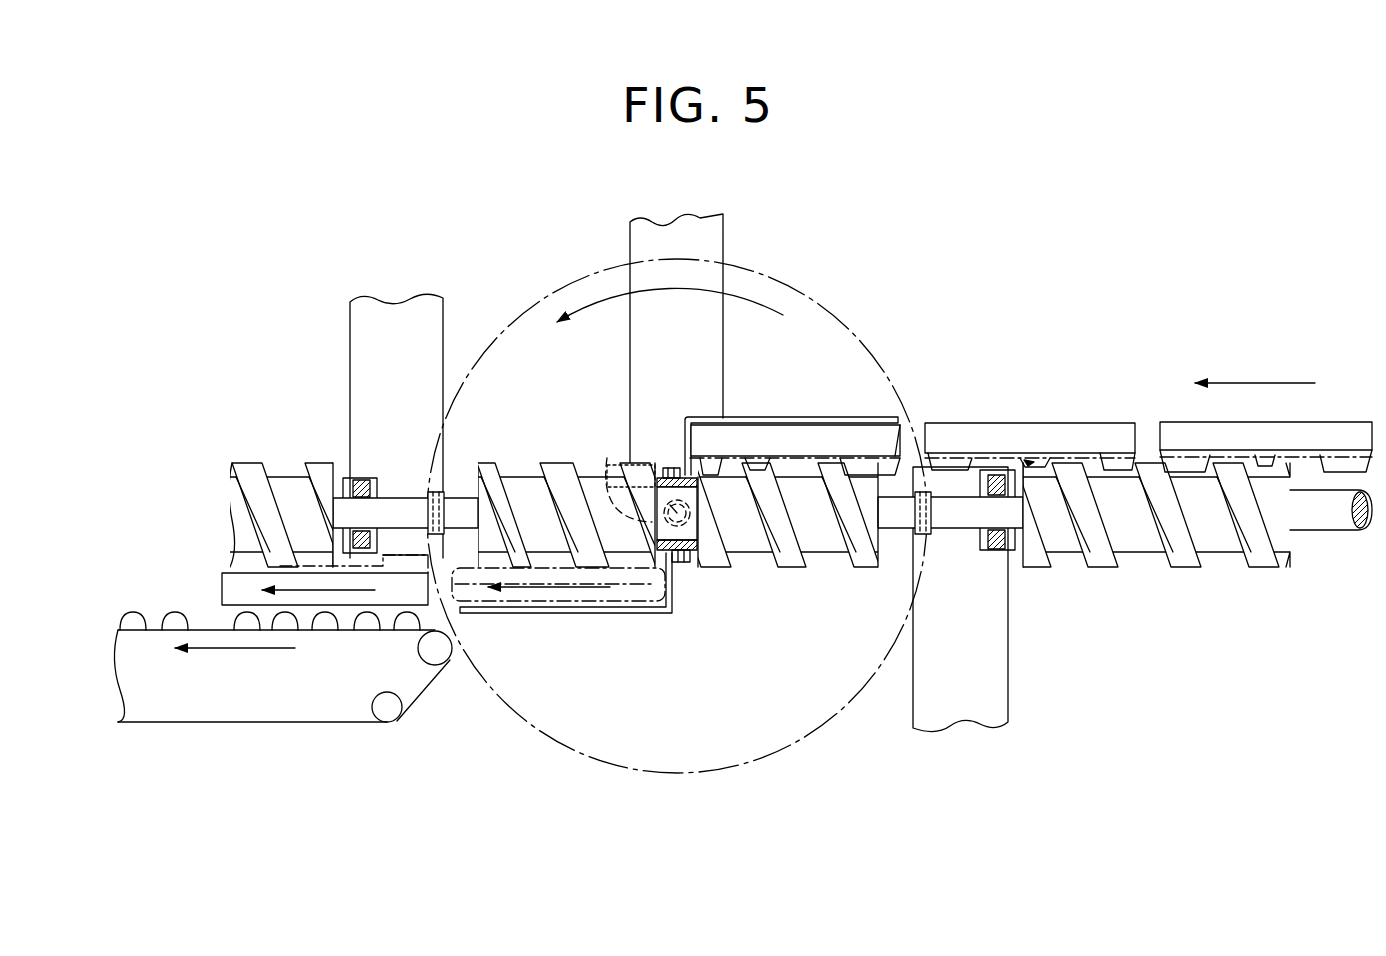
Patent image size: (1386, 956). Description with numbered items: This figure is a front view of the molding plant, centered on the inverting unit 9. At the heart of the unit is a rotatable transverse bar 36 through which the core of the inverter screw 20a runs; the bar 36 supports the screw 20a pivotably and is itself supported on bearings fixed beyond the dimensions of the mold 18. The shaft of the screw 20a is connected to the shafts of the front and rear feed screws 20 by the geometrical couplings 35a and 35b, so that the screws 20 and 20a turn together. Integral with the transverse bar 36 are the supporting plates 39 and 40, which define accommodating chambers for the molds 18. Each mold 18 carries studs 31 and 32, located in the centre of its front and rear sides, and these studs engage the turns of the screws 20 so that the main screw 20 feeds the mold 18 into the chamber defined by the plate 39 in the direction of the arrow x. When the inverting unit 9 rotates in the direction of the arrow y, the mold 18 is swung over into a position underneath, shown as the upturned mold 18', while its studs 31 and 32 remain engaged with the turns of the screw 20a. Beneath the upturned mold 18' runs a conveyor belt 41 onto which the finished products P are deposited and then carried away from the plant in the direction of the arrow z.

The inverting unit 9 is at (800, 362).
The mold 18 is at (973, 515).
The upturned mold 18' is at (293, 579).
The screw 20 is at (258, 478).
The screw of the inverter 20a is at (760, 565).
The stud 31 is at (680, 460).
The stud 32 is at (870, 462).
The geometrical coupling 35a is at (440, 490).
The geometrical coupling 35b is at (928, 542).
The transverse bar 36 is at (600, 465).
The supporting plate 39 is at (777, 418).
The supporting plate 40 is at (540, 598).
The conveyor belt 41 is at (283, 697).
The finished products P is at (367, 622).
The arrow X x is at (1272, 383).
The arrow Y y is at (687, 290).
The arrow Z z is at (243, 650).